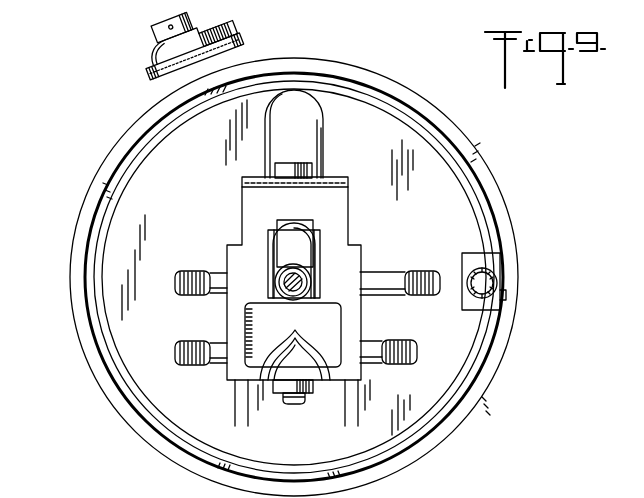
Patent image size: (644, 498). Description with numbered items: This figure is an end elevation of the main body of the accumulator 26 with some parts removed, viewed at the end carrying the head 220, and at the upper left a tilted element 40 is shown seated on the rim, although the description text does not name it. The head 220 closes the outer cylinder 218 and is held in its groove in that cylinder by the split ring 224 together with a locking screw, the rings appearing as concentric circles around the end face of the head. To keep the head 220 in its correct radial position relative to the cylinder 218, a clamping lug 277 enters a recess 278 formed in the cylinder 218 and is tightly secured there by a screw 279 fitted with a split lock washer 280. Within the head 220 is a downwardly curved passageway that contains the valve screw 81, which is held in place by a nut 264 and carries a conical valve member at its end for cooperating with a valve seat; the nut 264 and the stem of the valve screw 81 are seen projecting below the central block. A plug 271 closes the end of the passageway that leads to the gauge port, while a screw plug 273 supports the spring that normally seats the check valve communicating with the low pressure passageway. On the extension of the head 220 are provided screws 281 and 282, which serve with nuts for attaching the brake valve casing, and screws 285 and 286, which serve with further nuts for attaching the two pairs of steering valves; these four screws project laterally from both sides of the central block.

The aerosol container 40 is at (183, 52).
The accumulator 26 is at (501, 157).
The outer cylinder 218 is at (70, 277).
The split ring 224 is at (95, 216).
The head 220 is at (318, 463).
The screw plug 273 is at (335, 178).
The plug 271 is at (293, 283).
The screw 281 is at (205, 270).
The screw 282 is at (196, 340).
The screw 285 is at (393, 340).
The screw 286 is at (400, 272).
The clamping lug 277 is at (498, 268).
The recess 278 is at (502, 310).
The screw 279 is at (487, 288).
The split lock washer 280 is at (481, 268).
The nut 264 is at (285, 392).
The valve screw 81 is at (306, 398).